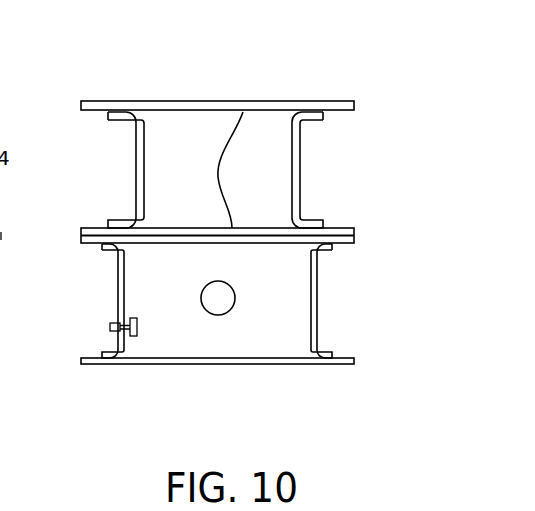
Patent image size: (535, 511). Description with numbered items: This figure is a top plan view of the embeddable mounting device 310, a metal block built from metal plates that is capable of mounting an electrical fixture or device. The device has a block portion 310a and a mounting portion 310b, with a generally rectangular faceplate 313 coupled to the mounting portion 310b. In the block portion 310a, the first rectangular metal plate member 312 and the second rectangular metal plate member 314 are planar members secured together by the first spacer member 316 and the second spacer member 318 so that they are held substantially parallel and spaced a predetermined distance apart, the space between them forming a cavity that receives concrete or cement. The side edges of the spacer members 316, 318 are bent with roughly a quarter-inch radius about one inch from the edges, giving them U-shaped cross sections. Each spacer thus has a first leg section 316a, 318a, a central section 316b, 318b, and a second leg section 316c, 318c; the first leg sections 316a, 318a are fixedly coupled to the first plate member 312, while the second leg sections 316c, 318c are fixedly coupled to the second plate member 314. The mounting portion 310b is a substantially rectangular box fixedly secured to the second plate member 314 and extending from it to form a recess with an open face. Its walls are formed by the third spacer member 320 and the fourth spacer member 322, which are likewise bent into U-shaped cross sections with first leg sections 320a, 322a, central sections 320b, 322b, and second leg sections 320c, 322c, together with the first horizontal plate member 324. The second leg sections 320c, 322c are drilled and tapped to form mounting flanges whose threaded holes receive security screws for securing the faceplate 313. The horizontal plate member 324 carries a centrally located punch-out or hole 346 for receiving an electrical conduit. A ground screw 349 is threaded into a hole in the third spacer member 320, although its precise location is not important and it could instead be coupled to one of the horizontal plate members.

The embeddable mounting device 310 is at (223, 217).
The block portion 310a is at (223, 124).
The mounting portion 310b is at (223, 331).
The first rectangular metal plate member 312 is at (168, 101).
The faceplate 313 is at (262, 380).
The second rectangular metal plate member 314 is at (243, 101).
The first spacer member 316 is at (123, 170).
The first leg section 316a is at (108, 125).
The central section 316b is at (144, 182).
The second leg section 316c is at (108, 222).
The second spacer member 318 is at (321, 170).
The first leg section 318a is at (323, 123).
The central section 318b is at (292, 183).
The second leg section 318c is at (323, 222).
The third spacer member 320 is at (106, 300).
The first leg section 320a is at (102, 248).
The central section 320b is at (124, 282).
The second leg section 320c is at (102, 355).
The fourth spacer member 322 is at (330, 298).
The first leg section 322a is at (333, 248).
The central section 322b is at (311, 312).
The second leg section 322c is at (328, 355).
The first horizontal plate member 324 is at (185, 347).
The hole 346 is at (229, 287).
The ground screw 349 is at (138, 333).